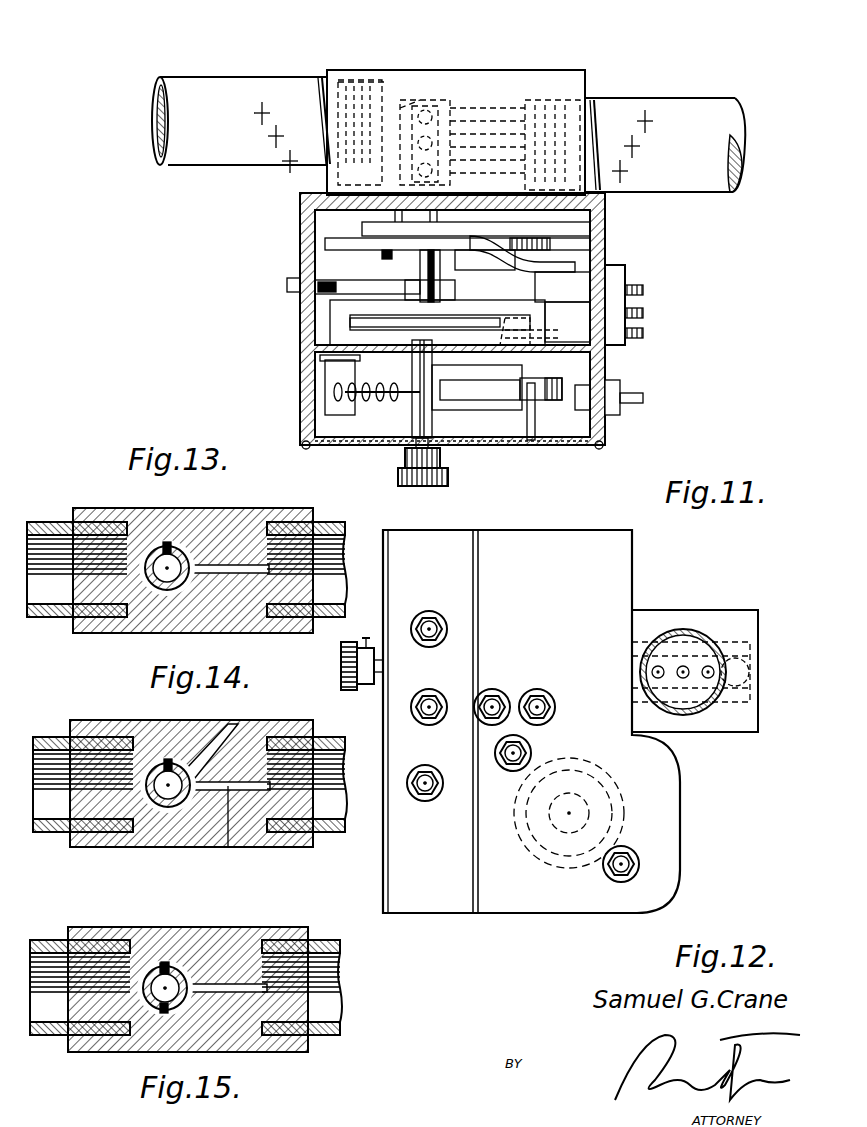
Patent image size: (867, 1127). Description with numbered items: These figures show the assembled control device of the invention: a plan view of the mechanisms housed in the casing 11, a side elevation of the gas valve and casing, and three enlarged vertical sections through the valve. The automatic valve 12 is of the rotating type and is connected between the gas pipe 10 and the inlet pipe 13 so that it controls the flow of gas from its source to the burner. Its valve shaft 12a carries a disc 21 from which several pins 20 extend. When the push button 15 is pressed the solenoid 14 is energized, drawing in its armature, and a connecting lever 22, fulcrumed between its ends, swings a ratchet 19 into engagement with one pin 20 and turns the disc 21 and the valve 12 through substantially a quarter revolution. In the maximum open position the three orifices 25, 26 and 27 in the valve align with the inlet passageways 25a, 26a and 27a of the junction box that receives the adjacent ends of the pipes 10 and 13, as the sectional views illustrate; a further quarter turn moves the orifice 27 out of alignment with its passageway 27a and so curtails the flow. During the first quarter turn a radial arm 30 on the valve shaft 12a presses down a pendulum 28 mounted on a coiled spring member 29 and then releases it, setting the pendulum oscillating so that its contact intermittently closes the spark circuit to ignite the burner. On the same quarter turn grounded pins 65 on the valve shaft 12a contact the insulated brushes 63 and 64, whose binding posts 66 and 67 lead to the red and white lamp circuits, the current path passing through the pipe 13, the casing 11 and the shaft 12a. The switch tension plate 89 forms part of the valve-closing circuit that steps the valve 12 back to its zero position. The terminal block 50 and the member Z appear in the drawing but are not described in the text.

In FIG. 11, the gas pipe 10 is at (200, 150).
In FIG. 13, the gas pipe 10 is at (50, 610).
In FIG. 14, the gas pipe 10 is at (55, 820).
In FIG. 15, the gas pipe 10 is at (14, 884).
In FIG. 11, the casing 11 is at (290, 330).
In FIG. 12, the casing 11 is at (612, 578).
In FIG. 11, the automatic valve 12 is at (452, 100).
In FIG. 13, the automatic valve 12 is at (122, 633).
In FIG. 14, the automatic valve 12 is at (255, 720).
In FIG. 15, the automatic valve 12 is at (180, 975).
In FIG. 11, the valve shaft 12a is at (430, 405).
In FIG. 12, the valve shaft 12a is at (372, 632).
In FIG. 11, the inlet pipe 13 is at (712, 105).
In FIG. 13, the inlet pipe 13 is at (335, 530).
In FIG. 14, the inlet pipe 13 is at (333, 815).
In FIG. 15, the inlet pipe 13 is at (337, 882).
In FIG. 12, the inlet pipe 13 is at (695, 632).
In FIG. 11, the solenoid 14 is at (461, 141).
In FIG. 11, the push button 15 is at (461, 117).
In FIG. 11, the ratchet 19 is at (338, 240).
In FIG. 11, the pin 20 is at (378, 258).
In FIG. 11, the disc 21 is at (367, 228).
In FIG. 11, the connecting lever 22 is at (562, 248).
In FIG. 11, the orifice 25 is at (427, 108).
In FIG. 15, the orifice 25 is at (163, 968).
In FIG. 11, the inlet passageway 25a is at (560, 95).
In FIG. 15, the inlet passageway 25a is at (218, 980).
In FIG. 12, the inlet passageway 25a is at (712, 666).
In FIG. 11, the orifice 26 is at (462, 142).
In FIG. 14, the orifice 26 is at (228, 724).
In FIG. 11, the inlet passageway 26a is at (585, 98).
In FIG. 14, the inlet passageway 26a is at (225, 847).
In FIG. 12, the inlet passageway 26a is at (685, 668).
In FIG. 11, the orifice 27 is at (405, 172).
In FIG. 13, the orifice 27 is at (170, 568).
In FIG. 11, the inlet passageway 27a is at (612, 190).
In FIG. 13, the inlet passageway 27a is at (240, 508).
In FIG. 12, the inlet passageway 27a is at (660, 675).
In FIG. 11, the pendulum 28 is at (510, 370).
In FIG. 11, the coiled spring member 29 is at (540, 400).
In FIG. 11, the radial arm 30 is at (458, 385).
In FIG. 11, the terminal block 50 is at (643, 313).
In FIG. 11, the insulated brush 63 is at (530, 340).
In FIG. 11, the insulated brush 64 is at (548, 290).
In FIG. 11, the pin 65 is at (420, 284).
In FIG. 11, the binding post 66 is at (645, 333).
In FIG. 11, the binding post 67 is at (645, 290).
In FIG. 11, the switch tension plate 89 is at (298, 277).
In FIG. 11, the bottom plate Z is at (535, 420).